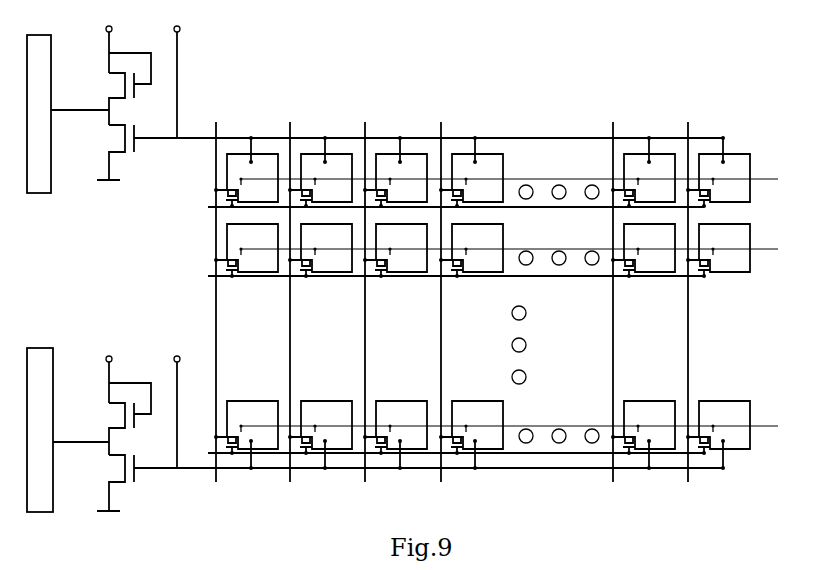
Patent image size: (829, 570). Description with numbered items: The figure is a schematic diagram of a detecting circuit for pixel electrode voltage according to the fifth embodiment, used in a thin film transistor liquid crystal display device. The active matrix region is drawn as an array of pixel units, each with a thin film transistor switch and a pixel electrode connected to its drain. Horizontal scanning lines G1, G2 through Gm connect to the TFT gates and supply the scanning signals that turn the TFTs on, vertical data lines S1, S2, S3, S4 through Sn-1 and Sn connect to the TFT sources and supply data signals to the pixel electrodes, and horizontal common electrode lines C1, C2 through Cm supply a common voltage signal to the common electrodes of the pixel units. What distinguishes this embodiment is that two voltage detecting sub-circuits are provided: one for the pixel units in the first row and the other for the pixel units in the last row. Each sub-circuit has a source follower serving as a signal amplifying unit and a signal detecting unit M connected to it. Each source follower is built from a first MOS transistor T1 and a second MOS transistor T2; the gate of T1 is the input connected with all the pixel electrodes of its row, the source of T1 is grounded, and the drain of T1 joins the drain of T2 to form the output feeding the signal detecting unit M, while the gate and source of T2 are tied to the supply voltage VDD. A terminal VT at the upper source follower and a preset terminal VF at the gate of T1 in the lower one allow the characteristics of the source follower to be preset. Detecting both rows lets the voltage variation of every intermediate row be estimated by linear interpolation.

The signal detecting unit M is at (38, 34).
The supply voltage VDD is at (110, 205).
The test voltage terminal VT is at (178, 72).
The preset terminal VF is at (177, 402).
The first MOS transistor T1 is at (110, 318).
The second MOS transistor T2 is at (118, 254).
The data line S1 is at (243, 292).
The data line S2 is at (317, 292).
The data line S3 is at (392, 292).
The data line S4 is at (468, 292).
The data line Sn-1 is at (639, 292).
The data line Sn is at (715, 292).
The scanning line G1 is at (444, 208).
The scanning line G2 is at (444, 275).
The scanning line Gm is at (442, 452).
The common electrode line C1 is at (519, 181).
The common electrode line C2 is at (519, 249).
The common electrode line Cm is at (521, 426).